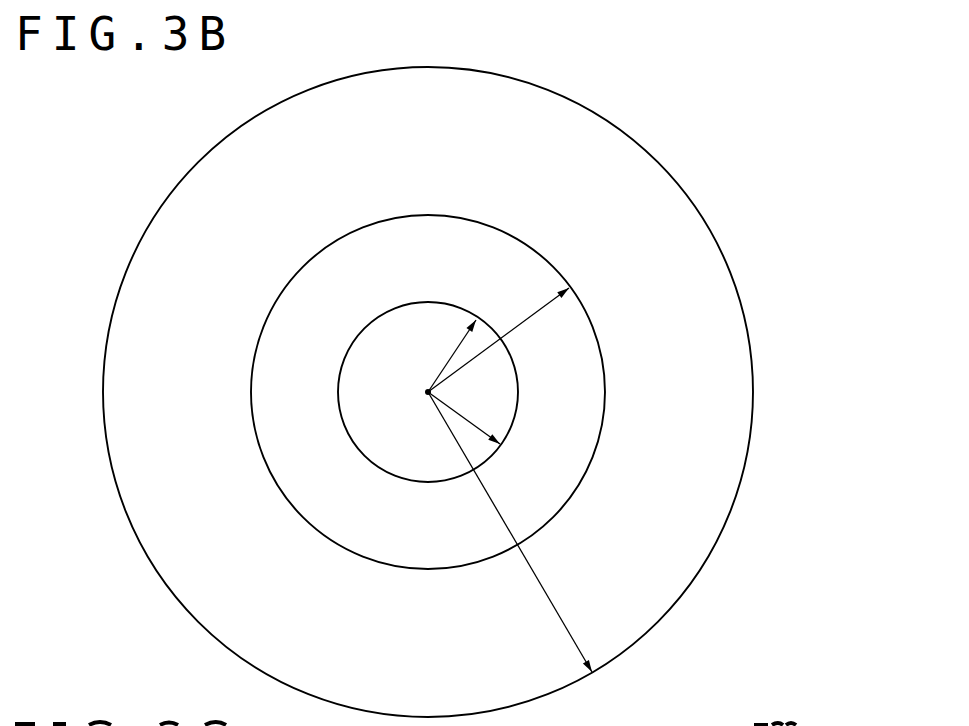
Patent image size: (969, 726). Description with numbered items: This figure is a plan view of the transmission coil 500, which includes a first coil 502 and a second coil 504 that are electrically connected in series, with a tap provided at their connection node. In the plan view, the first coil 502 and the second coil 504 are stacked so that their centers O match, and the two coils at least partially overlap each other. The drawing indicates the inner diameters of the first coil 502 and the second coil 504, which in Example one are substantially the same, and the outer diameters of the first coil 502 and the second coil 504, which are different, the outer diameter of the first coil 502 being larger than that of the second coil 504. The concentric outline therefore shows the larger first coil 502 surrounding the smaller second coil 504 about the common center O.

The transmission coil 500 is at (468, 391).
The first coil 502 is at (717, 377).
The second coil 504 is at (469, 392).